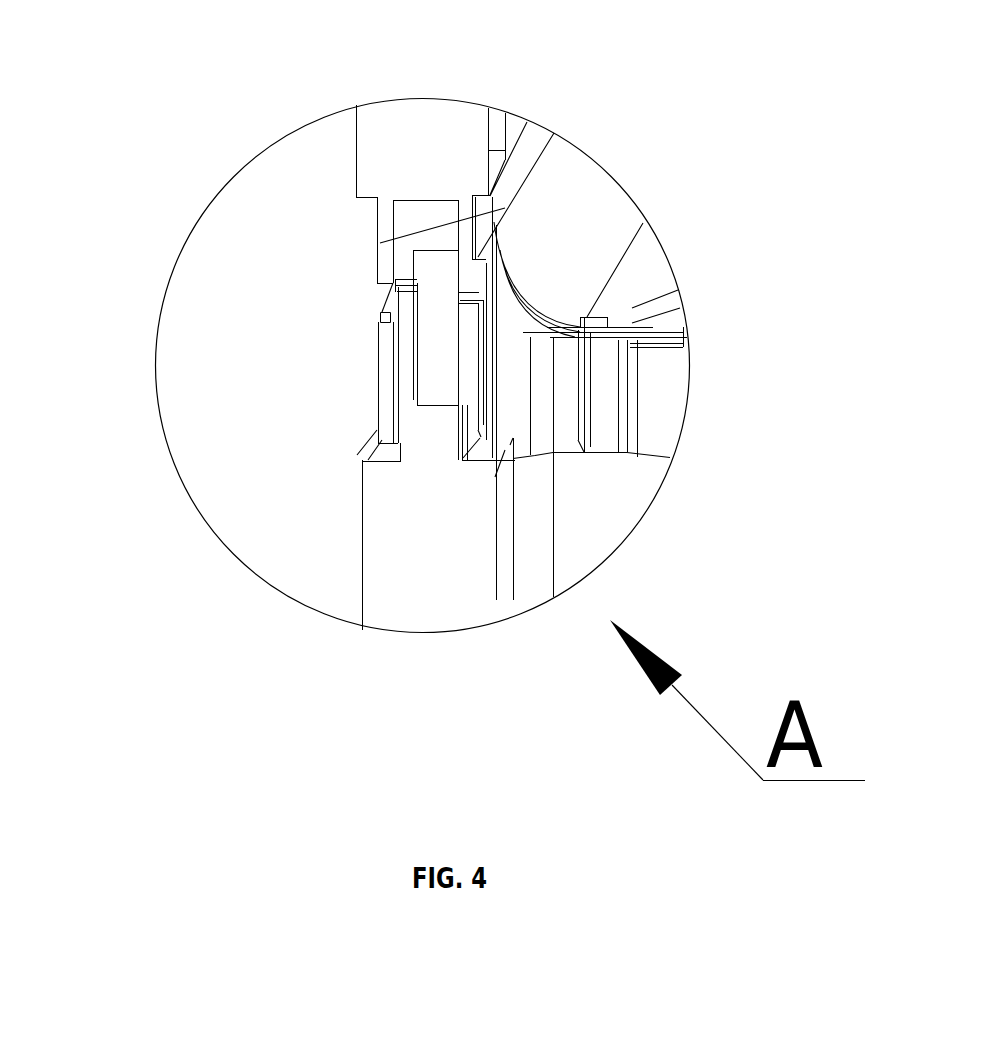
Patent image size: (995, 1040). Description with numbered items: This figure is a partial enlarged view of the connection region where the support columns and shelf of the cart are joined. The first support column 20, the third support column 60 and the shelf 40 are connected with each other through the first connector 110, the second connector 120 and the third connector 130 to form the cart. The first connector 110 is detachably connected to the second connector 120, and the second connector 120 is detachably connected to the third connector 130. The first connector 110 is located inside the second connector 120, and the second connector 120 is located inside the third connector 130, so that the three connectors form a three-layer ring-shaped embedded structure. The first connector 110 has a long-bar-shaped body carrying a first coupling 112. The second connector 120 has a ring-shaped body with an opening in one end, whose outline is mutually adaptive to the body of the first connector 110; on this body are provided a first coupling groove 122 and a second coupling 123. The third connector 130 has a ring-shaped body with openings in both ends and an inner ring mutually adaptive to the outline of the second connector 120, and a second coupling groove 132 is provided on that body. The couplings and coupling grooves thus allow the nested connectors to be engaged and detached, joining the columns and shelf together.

The third support column 60 is at (393, 130).
The second connector 120 is at (465, 245).
The first coupling groove 122 is at (380, 317).
The second coupling groove 132 is at (478, 257).
The shelf 40 is at (673, 350).
The first coupling 112 is at (402, 315).
The second coupling 123 is at (467, 273).
The first connector 110 is at (418, 382).
The third connector 130 is at (500, 405).
The first support column 20 is at (418, 548).